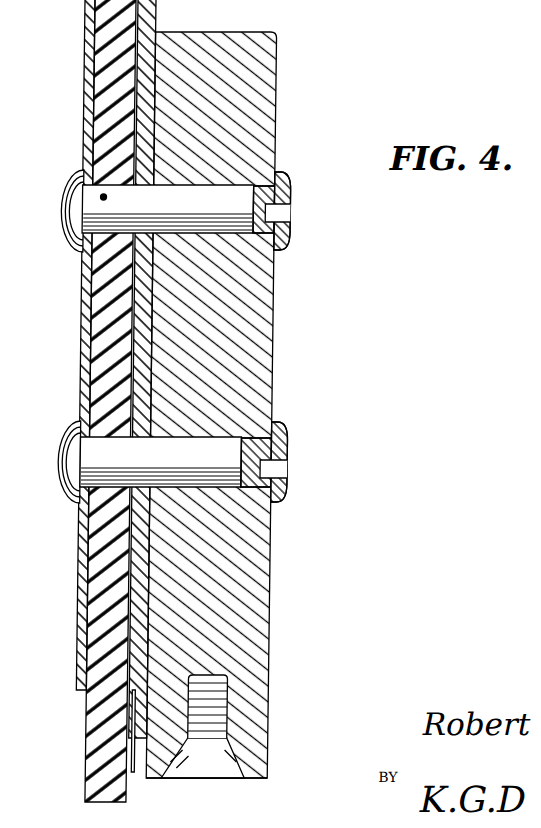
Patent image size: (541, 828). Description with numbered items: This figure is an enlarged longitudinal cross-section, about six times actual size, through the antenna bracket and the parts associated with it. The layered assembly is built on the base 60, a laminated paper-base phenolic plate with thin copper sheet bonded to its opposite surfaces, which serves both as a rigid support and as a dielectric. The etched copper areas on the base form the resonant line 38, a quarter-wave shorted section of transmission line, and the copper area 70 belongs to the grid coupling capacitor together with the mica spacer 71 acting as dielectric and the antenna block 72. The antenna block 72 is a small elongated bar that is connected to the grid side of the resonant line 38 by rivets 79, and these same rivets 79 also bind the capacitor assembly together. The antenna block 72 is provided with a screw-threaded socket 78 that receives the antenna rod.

The resonant line 38 is at (86, 633).
The base 60 is at (112, 802).
The copper area 70 is at (140, 690).
The mica spacer 71 is at (157, 10).
The antenna block 72 is at (273, 636).
The screw-threaded socket 78 is at (236, 722).
The rivets 79 is at (294, 236).